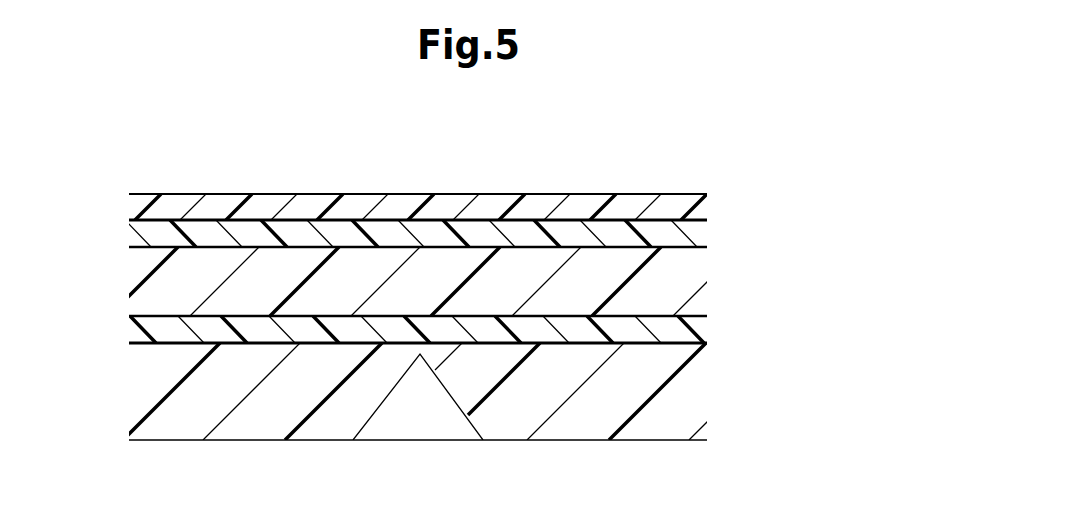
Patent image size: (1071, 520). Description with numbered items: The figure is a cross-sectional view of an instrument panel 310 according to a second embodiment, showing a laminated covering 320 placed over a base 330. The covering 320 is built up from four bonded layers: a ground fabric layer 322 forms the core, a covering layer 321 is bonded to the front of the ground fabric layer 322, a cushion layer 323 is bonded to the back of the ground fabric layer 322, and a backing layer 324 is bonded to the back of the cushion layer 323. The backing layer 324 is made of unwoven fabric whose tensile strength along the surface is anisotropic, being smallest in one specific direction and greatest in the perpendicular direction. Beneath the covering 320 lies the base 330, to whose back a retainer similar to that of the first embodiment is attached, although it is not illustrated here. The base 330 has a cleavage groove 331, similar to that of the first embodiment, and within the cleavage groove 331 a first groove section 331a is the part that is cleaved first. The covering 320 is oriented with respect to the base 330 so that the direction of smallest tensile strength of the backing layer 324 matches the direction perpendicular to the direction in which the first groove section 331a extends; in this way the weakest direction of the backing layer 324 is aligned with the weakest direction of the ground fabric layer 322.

The instrument panel 310 is at (642, 170).
The covering 320 is at (120, 195).
The covering layer 321 is at (700, 210).
The ground fabric layer 322 is at (698, 232).
The cushion layer 323 is at (702, 275).
The backing layer 324 is at (698, 325).
The base 330 is at (120, 345).
The cleavage groove 331 is at (420, 419).
The first groove section 331a is at (380, 408).